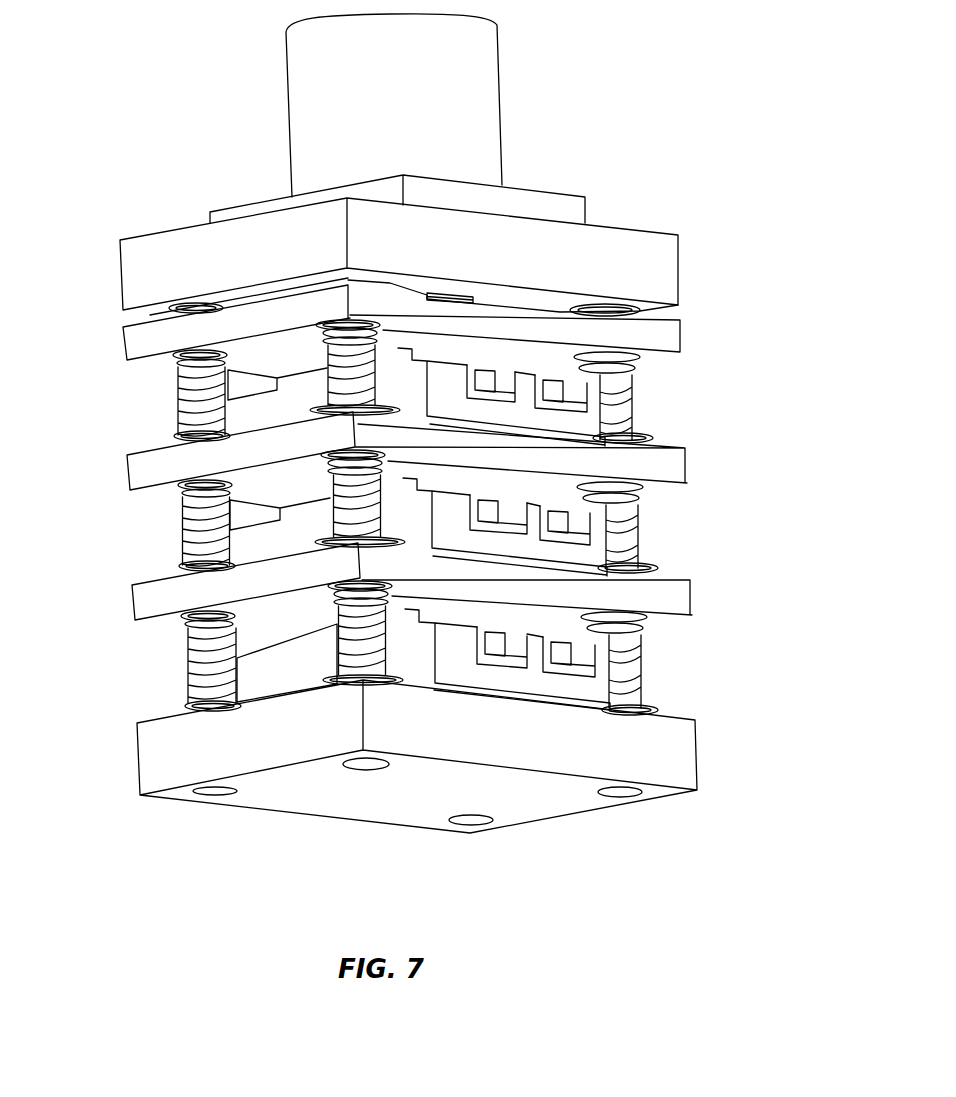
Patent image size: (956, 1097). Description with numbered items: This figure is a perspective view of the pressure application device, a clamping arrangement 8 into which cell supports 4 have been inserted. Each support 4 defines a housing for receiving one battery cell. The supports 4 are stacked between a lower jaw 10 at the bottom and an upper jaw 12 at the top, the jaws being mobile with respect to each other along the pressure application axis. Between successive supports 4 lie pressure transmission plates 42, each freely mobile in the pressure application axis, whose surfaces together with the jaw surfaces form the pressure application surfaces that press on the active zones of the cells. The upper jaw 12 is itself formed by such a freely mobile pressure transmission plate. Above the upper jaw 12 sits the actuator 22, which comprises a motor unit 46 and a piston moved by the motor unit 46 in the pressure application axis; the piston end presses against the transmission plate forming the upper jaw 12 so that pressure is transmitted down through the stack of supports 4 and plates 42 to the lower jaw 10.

The clamping arrangement 8 is at (165, 141).
The motor unit 46 is at (488, 62).
The actuator 22 is at (542, 90).
The upper jaw 12 is at (697, 338).
The support 4 is at (573, 417).
The pressure transmission plate 42 is at (702, 482).
The lower jaw 10 is at (707, 772).